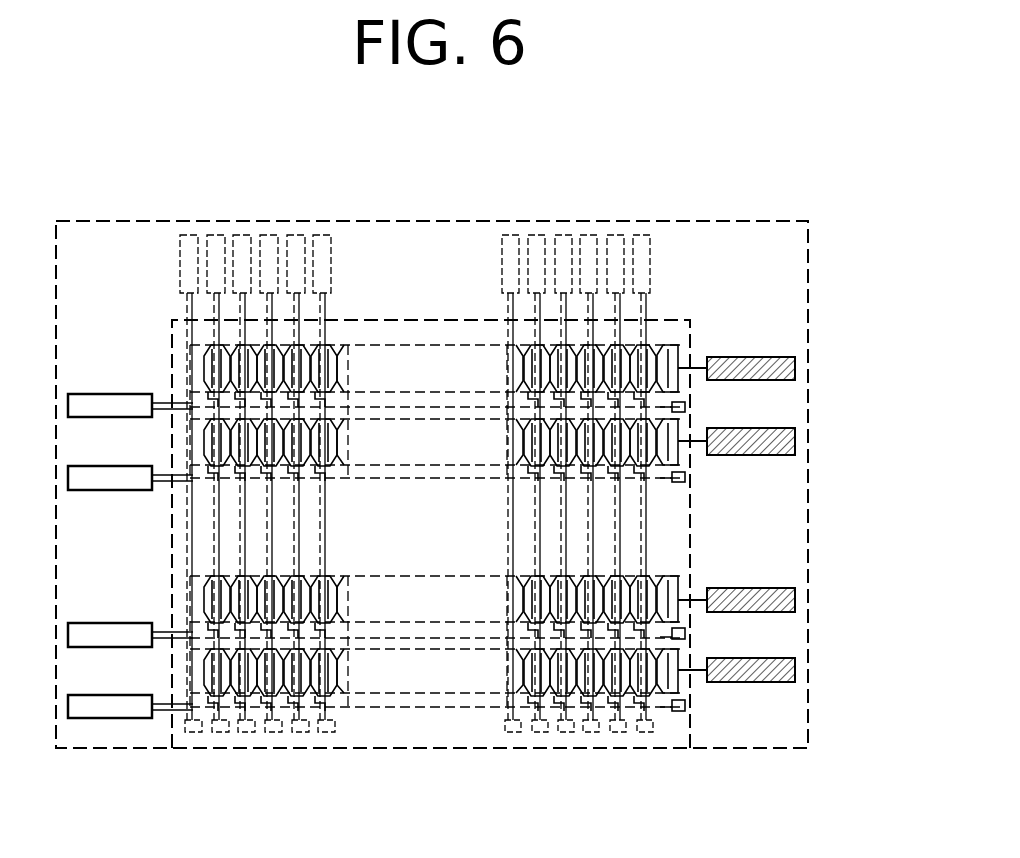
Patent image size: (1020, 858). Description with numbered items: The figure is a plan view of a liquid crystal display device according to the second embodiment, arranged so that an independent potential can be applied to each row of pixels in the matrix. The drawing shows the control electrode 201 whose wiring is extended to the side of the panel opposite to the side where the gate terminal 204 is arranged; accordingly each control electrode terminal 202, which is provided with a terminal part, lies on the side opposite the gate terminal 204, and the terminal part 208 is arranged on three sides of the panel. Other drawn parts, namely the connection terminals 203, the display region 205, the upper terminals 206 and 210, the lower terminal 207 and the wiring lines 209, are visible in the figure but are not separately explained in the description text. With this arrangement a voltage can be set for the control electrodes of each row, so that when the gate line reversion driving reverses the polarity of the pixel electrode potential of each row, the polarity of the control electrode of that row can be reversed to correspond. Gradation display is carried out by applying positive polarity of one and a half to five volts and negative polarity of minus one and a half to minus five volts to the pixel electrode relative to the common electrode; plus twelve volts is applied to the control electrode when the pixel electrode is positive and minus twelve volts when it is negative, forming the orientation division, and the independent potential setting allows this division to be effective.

The control electrode 201 is at (657, 447).
The control electrode terminal 202 is at (795, 368).
The bottom connection terminals 203 is at (660, 716).
The gate terminal 204 is at (110, 720).
The display region 205 is at (655, 333).
The top connection terminals 206 is at (328, 236).
The lower common electrode terminal 207 is at (665, 568).
The terminal part 208 is at (125, 240).
The wiring lines 209 is at (442, 338).
The top connection terminals 210 is at (598, 222).